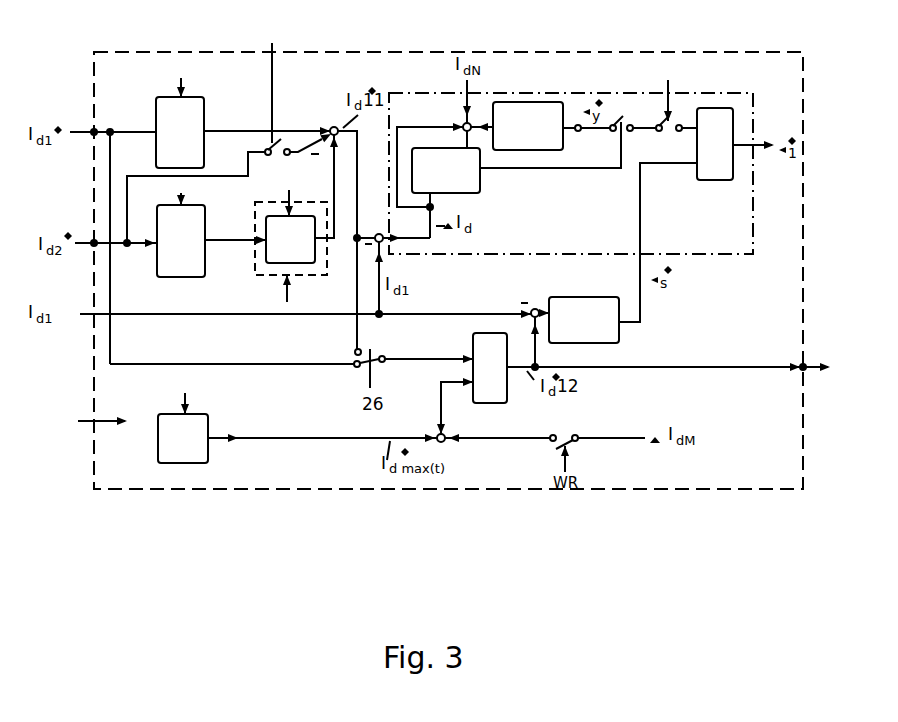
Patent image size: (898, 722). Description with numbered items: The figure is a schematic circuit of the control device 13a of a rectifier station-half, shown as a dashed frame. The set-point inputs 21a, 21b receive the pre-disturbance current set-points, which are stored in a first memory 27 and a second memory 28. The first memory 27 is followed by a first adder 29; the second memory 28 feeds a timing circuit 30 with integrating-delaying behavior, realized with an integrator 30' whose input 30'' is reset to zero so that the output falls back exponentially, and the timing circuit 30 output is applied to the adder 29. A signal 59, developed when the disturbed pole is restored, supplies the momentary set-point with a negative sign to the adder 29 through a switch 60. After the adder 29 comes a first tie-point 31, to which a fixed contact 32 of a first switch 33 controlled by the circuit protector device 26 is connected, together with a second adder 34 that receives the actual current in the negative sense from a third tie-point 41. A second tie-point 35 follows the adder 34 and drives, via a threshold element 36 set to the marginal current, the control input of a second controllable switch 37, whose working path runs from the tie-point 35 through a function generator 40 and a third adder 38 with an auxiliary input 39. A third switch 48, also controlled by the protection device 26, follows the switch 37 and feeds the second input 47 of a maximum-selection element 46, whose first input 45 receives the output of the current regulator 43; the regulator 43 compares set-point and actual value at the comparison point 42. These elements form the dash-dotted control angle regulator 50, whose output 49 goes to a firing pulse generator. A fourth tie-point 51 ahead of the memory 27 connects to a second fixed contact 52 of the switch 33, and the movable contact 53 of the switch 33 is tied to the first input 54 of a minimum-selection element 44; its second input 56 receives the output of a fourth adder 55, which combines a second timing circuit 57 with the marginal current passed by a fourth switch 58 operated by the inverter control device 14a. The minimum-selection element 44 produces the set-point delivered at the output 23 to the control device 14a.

The control device 13a is at (716, 52).
The control device 14a is at (837, 374).
The set-point input 21a is at (113, 140).
The set-point input 21b is at (116, 233).
The output 23 is at (654, 344).
The circuit protector device 26 is at (361, 239).
The first memory 27 is at (194, 194).
The second memory 28 is at (192, 277).
The first adder 29 is at (333, 126).
The timing circuit 30 is at (283, 199).
The integrator 30' is at (287, 251).
The integrator input 30'' is at (305, 288).
The first tie-point 31 is at (356, 240).
The fixed contact 32 is at (348, 347).
The first switch 33 is at (373, 357).
The second adder 34 is at (399, 225).
The second tie-point 35 is at (430, 180).
The threshold element 36 is at (516, 164).
The second controllable switch 37 is at (633, 116).
The third adder 38 is at (475, 137).
The auxiliary input 39 is at (458, 101).
The function generator 40 is at (565, 146).
The third tie-point 41 is at (389, 288).
The comparison point 42 is at (537, 308).
The current regulator 43 is at (582, 297).
The minimum-selection element 44 is at (490, 404).
The first input 45 is at (658, 242).
The maximum-selection element 46 is at (713, 181).
The second input 47 is at (687, 139).
The third switch 48 is at (657, 135).
The output 49 is at (757, 135).
The control angle regulator 50 is at (733, 254).
The fourth tie-point 51 is at (229, 236).
The second fixed contact 52 is at (361, 373).
The switch contact 53 is at (426, 368).
The first input 54 is at (459, 350).
The fourth adder 55 is at (455, 428).
The second input 56 is at (455, 398).
The second timing circuit 57 is at (197, 463).
The fourth switch 58 is at (545, 443).
The signal 59 is at (274, 82).
The switch 60 is at (299, 152).